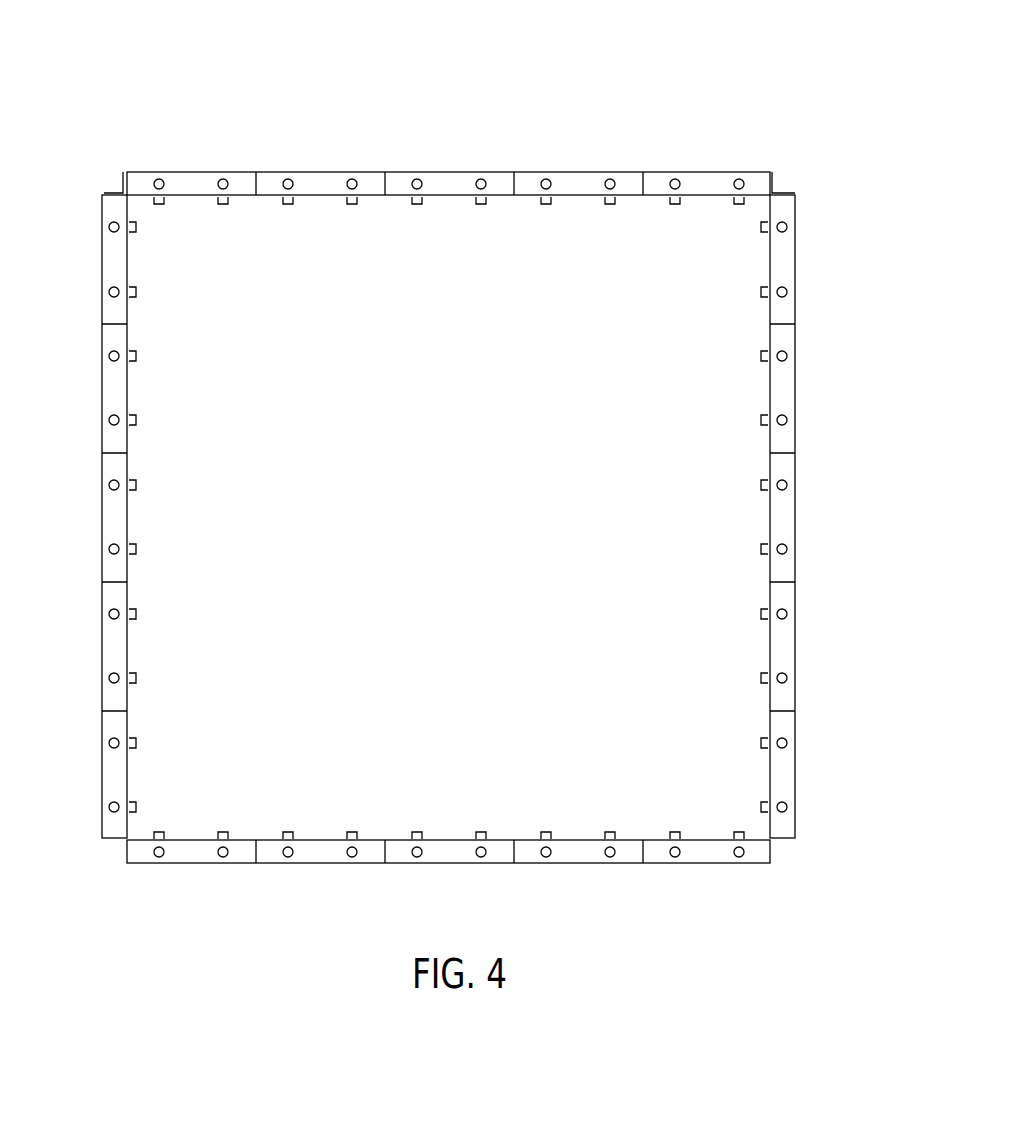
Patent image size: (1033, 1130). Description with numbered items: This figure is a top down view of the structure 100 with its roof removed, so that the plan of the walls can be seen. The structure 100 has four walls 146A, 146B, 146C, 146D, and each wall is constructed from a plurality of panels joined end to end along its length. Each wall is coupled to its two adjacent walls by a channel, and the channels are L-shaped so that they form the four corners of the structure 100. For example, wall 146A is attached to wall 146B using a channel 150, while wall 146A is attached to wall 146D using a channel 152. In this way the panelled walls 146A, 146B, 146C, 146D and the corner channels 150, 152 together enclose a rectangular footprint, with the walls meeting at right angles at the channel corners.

The structure 100 is at (742, 62).
The wall 146A is at (96, 393).
The wall 146B is at (435, 132).
The wall 146C is at (804, 398).
The wall 146D is at (324, 888).
The channel 150 is at (119, 191).
The channel 152 is at (778, 191).